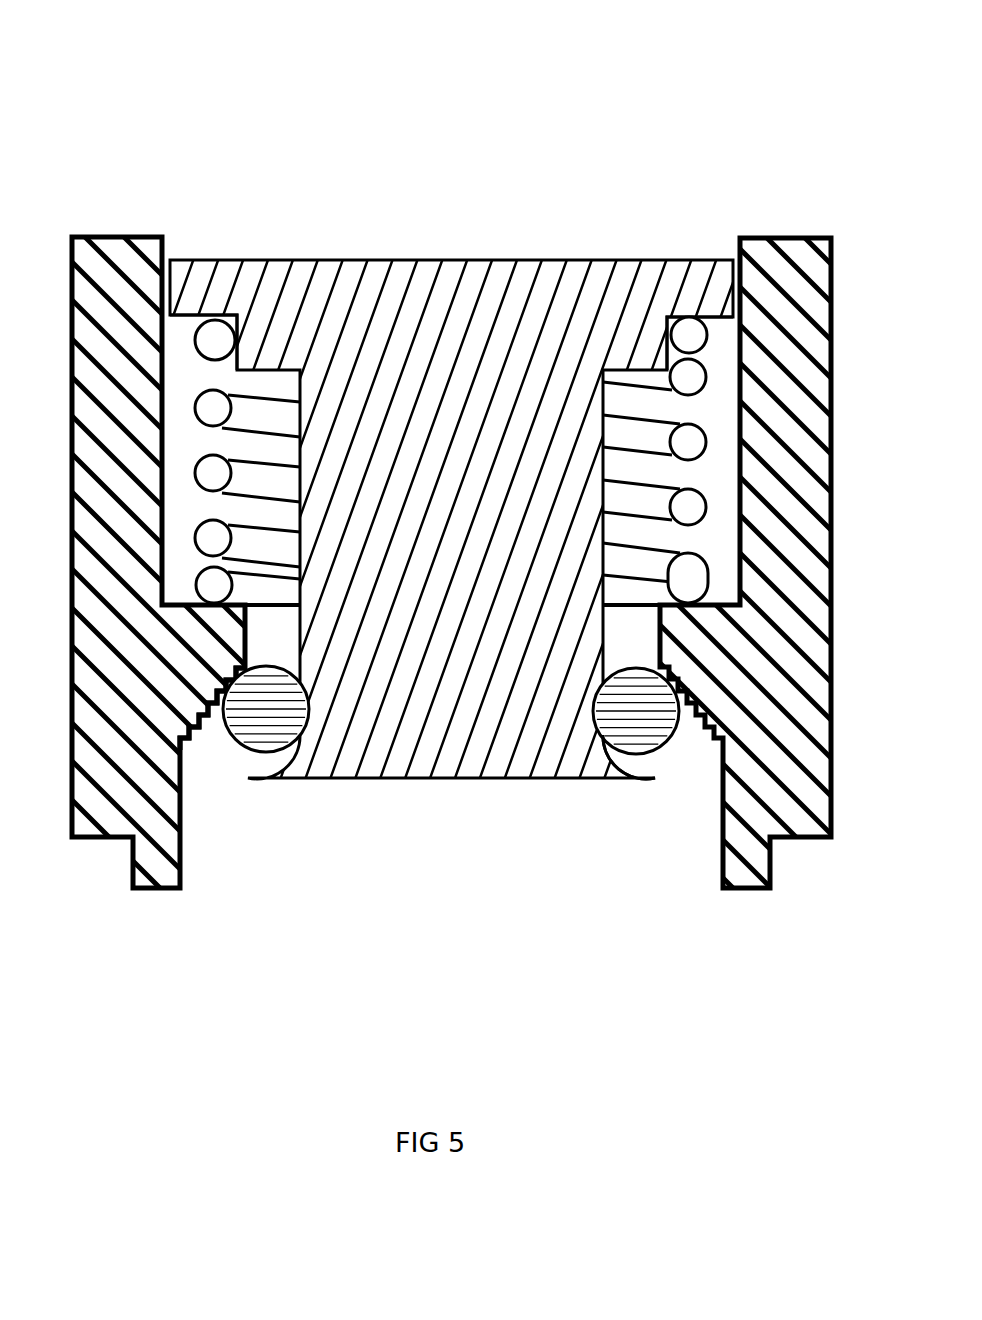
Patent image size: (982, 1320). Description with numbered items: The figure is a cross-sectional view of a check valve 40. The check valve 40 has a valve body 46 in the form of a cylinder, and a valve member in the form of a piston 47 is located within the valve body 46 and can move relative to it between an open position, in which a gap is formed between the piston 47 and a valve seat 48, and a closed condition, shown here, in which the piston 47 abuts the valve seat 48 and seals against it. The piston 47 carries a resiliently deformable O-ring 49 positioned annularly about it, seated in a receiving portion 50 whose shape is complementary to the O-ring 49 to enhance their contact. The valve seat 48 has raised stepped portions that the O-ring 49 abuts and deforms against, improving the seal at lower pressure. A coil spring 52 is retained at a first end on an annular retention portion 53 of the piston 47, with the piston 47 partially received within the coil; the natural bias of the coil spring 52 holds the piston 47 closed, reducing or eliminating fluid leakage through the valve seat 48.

The check valve 40 is at (426, 588).
The valve body 46 is at (131, 298).
The piston 47 is at (409, 700).
The valve seat 48 is at (201, 745).
The O-ring 49 is at (643, 738).
The receiving portion 50 is at (599, 765).
The coil spring 52 is at (690, 440).
The annular retention portion 53 is at (632, 335).